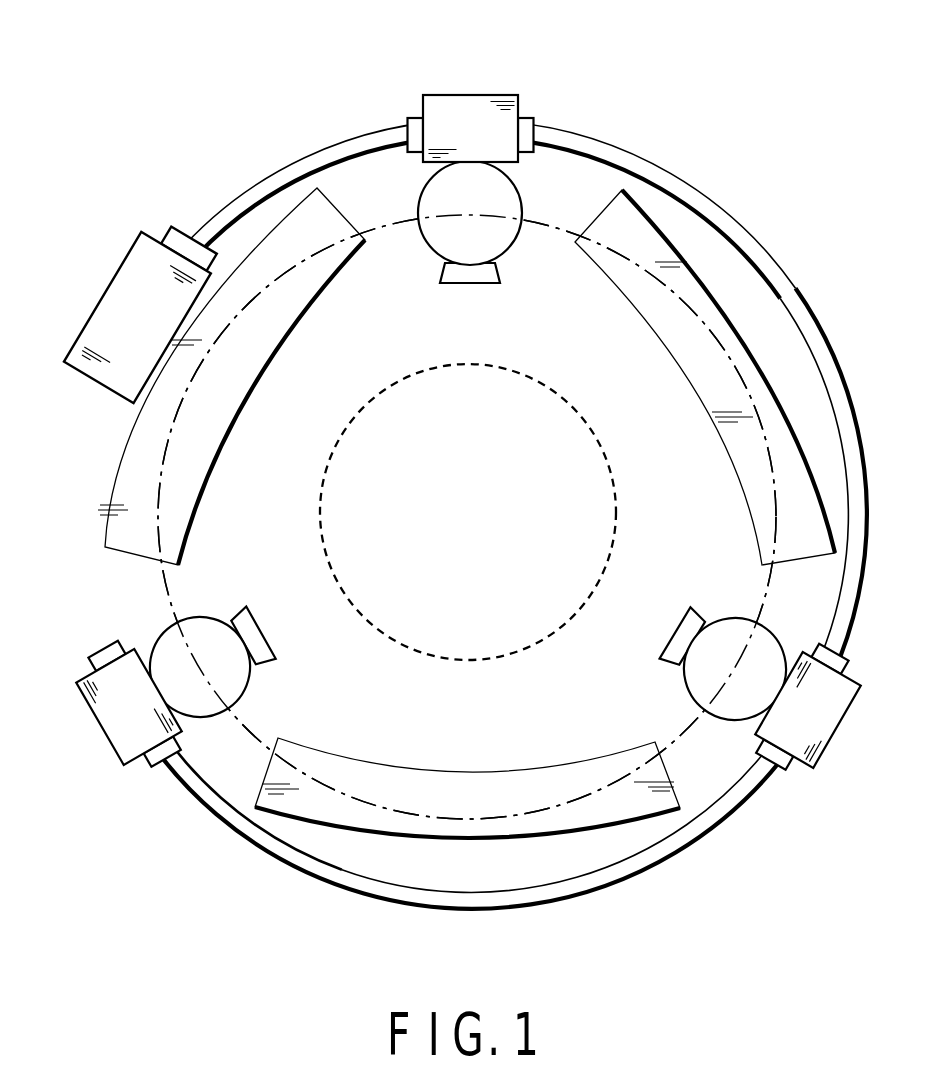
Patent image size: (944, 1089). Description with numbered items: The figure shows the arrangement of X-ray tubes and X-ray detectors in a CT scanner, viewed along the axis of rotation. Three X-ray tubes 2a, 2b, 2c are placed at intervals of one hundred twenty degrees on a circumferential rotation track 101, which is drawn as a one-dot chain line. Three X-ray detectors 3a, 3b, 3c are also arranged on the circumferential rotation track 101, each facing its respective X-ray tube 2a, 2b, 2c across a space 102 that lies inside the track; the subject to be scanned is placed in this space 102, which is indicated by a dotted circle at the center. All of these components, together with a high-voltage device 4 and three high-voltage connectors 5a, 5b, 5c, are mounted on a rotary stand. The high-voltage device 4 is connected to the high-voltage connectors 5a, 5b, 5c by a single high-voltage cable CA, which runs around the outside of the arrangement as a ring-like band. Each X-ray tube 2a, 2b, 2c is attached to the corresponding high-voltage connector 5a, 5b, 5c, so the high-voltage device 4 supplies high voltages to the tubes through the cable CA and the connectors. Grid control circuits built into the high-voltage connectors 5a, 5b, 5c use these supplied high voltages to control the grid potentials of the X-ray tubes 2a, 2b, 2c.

The high-voltage cable CA is at (292, 165).
The circumferential rotation track 101 is at (167, 587).
The space 102 is at (598, 362).
The X-ray tube 2a is at (422, 262).
The X-ray tube 2b is at (728, 610).
The X-ray tube 2c is at (265, 685).
The X-ray detector 3a is at (458, 785).
The X-ray detector 3b is at (226, 426).
The X-ray detector 3c is at (715, 430).
The high-voltage device 4 is at (97, 306).
The high-voltage connector 5a is at (468, 103).
The high-voltage connector 5b is at (835, 722).
The high-voltage connector 5c is at (105, 718).